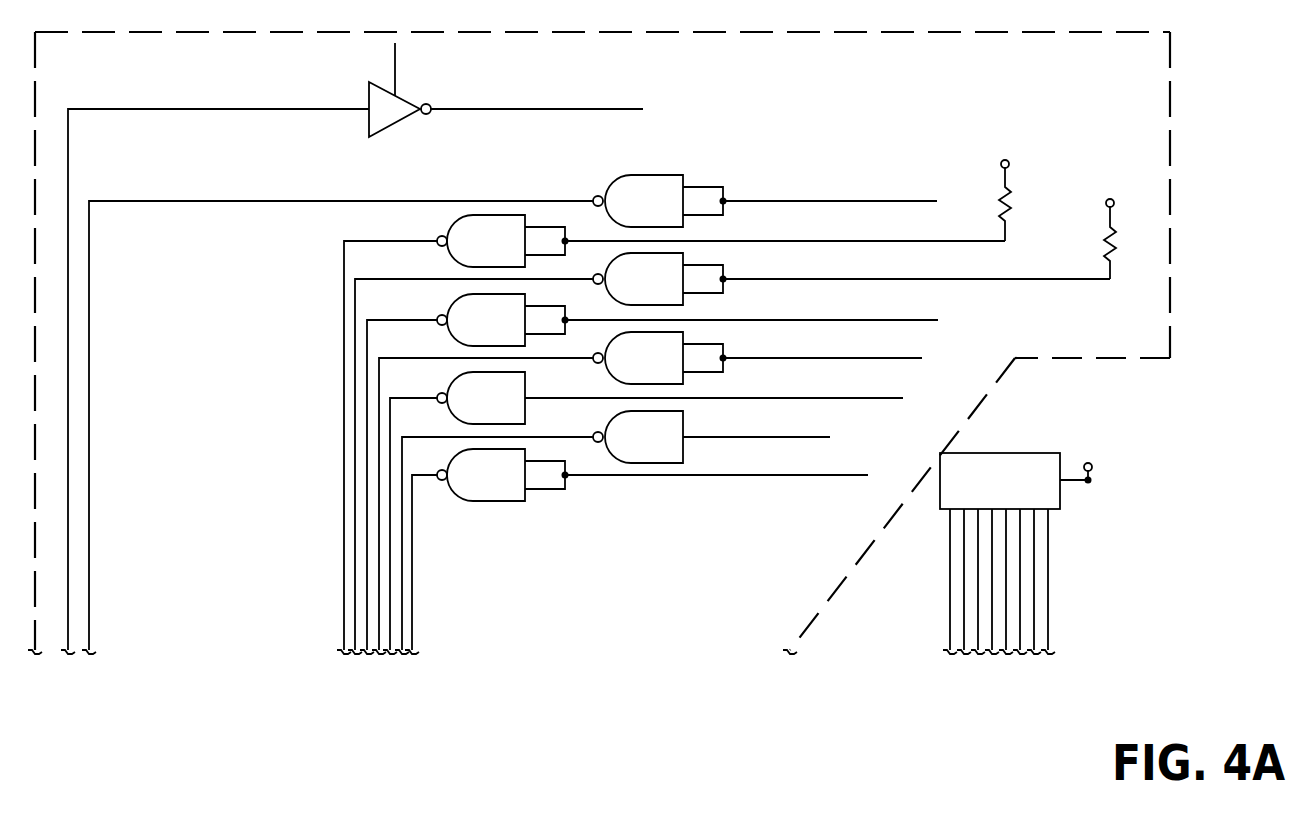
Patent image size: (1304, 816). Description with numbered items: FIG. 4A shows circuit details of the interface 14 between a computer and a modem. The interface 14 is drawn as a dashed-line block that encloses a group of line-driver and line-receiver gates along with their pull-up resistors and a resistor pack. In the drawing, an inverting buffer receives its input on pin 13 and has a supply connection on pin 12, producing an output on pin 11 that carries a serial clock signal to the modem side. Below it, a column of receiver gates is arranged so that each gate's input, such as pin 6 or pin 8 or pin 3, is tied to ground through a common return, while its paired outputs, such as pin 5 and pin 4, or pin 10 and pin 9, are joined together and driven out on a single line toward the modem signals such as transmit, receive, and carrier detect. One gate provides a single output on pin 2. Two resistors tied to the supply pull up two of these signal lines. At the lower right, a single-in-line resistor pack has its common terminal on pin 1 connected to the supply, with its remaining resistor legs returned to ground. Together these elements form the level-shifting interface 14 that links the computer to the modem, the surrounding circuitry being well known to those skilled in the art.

The interface 14 is at (190, 338).
The U615D input pin 12 is at (405, 69).
The U615D input pin 13 is at (218, 371).
The U615D output pin 11 is at (532, 103).
The U614B input pin 6 is at (473, 241).
The U614B output pin 5 is at (545, 227).
The U614B output pin 4 is at (545, 251).
The U614C input pin 8 is at (632, 279).
The U614C output pin 10 is at (703, 265).
The U614C output pin 9 is at (703, 289).
The U613A input pin 3 is at (475, 398).
The U613A output pin 2 is at (714, 390).
The RPACK1 pin 1 is at (1076, 473).